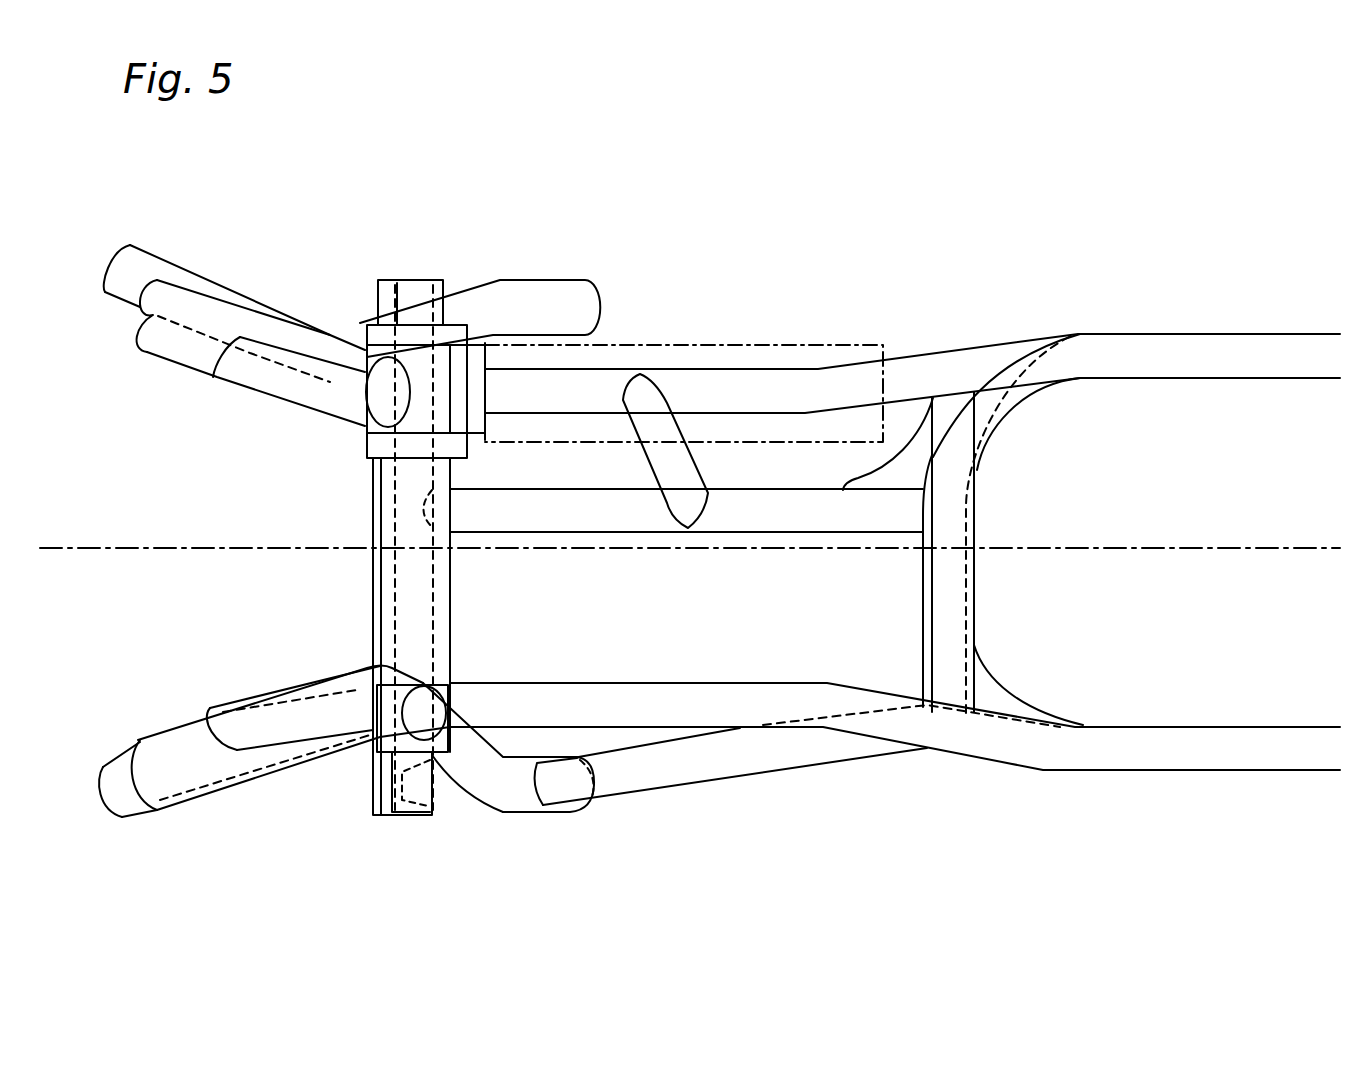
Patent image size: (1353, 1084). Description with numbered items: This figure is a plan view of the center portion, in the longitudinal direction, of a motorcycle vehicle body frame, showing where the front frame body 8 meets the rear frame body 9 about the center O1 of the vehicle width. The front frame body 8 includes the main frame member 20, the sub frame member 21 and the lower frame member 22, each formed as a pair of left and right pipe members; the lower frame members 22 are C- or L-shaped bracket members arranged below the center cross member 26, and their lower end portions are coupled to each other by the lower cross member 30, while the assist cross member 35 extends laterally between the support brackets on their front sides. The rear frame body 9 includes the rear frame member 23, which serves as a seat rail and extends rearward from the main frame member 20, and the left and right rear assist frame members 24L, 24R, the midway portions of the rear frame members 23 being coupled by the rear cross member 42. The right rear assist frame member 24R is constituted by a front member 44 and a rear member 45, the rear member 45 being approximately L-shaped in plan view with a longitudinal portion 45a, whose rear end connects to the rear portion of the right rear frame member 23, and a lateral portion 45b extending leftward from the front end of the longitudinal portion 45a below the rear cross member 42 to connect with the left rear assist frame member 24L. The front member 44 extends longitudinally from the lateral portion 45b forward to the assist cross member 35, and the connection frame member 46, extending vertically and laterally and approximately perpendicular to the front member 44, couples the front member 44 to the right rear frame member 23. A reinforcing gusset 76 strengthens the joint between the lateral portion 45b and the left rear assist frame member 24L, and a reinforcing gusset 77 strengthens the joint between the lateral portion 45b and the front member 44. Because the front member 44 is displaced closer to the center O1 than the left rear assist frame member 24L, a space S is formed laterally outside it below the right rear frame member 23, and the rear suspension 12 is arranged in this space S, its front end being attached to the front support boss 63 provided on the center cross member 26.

The front frame body 8 is at (326, 187).
The rear frame body 9 is at (901, 246).
The rear suspension 12 is at (650, 343).
The main frame member 20 is at (222, 838).
The sub frame member 21 is at (150, 253).
The lower frame member 22 is at (535, 877).
The rear frame member 23 is at (945, 820).
The left rear assist frame member 24L is at (780, 755).
The right rear assist frame member 24R is at (845, 534).
The center cross member 26 is at (450, 625).
The lower cross member 30 is at (378, 568).
The assist cross member 35 is at (443, 583).
The rear cross member 42 is at (974, 598).
The front member 44 is at (753, 517).
The rear member 45 is at (1128, 437).
The longitudinal portion 45a is at (1097, 382).
The lateral portion 45b is at (980, 530).
The connection frame member 46 is at (688, 428).
The front support boss 63 is at (367, 447).
The reinforcing gusset 76 is at (990, 693).
The reinforcing gusset 77 is at (903, 465).
The space S is at (785, 422).
The center of vehicle width O1 is at (180, 547).